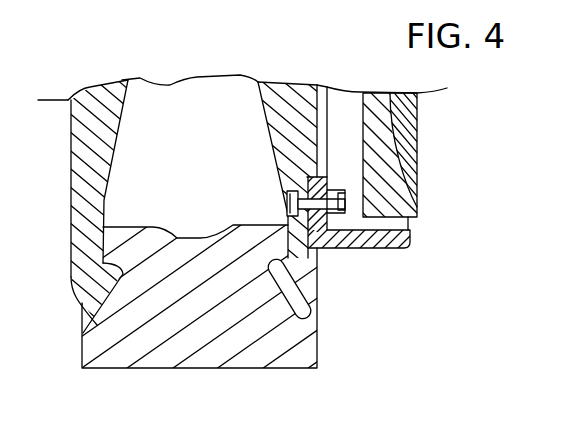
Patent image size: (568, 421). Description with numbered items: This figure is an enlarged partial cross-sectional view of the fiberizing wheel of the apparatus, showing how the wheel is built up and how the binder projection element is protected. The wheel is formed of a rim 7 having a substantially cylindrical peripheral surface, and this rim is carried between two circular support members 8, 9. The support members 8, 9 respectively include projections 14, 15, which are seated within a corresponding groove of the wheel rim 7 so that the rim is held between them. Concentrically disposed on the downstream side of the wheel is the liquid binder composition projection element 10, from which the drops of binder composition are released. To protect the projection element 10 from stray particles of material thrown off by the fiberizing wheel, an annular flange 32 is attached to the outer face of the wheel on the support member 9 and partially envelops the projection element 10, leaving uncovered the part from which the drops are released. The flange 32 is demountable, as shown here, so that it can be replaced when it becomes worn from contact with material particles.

The rim 7 is at (178, 362).
The support member 8 is at (80, 152).
The support member 9 is at (285, 133).
The liquid binder composition projection element 10 is at (424, 208).
The projection 14 is at (78, 300).
The projection 15 is at (287, 273).
The flange 32 is at (384, 246).